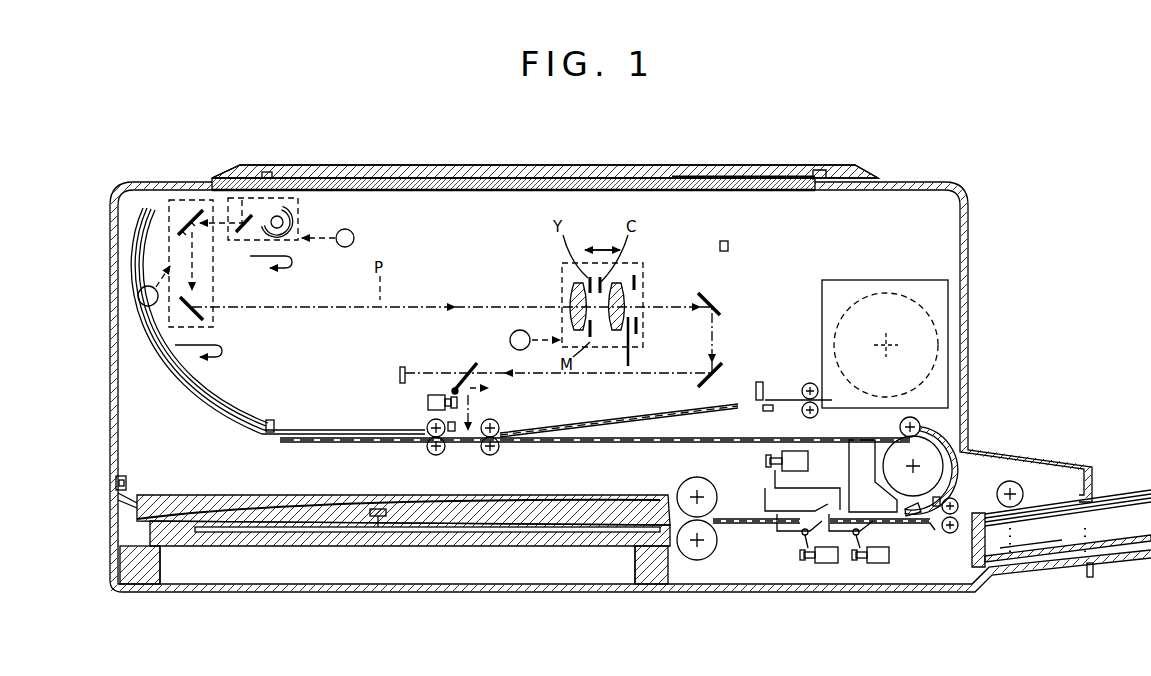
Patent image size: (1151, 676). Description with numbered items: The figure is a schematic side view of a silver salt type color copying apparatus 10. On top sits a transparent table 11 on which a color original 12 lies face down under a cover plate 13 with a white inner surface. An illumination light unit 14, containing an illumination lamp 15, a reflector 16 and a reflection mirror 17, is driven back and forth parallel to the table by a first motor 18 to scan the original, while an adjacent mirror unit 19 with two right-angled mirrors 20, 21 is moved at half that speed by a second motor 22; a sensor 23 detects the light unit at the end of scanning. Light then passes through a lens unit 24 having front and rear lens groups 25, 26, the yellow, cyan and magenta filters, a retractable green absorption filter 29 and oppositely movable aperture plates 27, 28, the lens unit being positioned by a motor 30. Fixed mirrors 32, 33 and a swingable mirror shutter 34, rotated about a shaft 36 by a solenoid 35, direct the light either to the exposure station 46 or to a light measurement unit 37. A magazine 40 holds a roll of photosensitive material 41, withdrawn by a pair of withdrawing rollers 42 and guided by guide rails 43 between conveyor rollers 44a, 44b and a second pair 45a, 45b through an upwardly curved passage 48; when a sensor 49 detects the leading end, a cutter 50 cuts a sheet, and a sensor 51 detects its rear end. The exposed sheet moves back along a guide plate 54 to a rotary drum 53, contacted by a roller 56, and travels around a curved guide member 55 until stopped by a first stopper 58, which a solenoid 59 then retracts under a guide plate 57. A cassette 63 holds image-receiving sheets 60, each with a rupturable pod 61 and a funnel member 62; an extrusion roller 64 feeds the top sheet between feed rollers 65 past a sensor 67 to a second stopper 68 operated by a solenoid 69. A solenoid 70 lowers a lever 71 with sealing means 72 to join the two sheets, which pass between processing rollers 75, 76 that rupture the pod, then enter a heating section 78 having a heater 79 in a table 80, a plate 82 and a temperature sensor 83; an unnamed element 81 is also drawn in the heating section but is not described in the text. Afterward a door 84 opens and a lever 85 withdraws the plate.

The copying apparatus 10 is at (968, 230).
The transparent table 11 is at (768, 192).
The color original 12 is at (550, 172).
The cover plate 13 is at (726, 172).
The illumination light unit 14 is at (233, 200).
The illumination lamp 15 is at (288, 222).
The reflector 16 is at (288, 207).
The reflection mirror 17 is at (246, 236).
The first motor 18 is at (354, 240).
The mirror unit 19 is at (170, 212).
The mirror 20 is at (190, 218).
The mirror 21 is at (205, 318).
The second motor 22 is at (150, 307).
The sensor 23 is at (729, 246).
The lens unit 24 is at (562, 295).
The front lens group 25 is at (575, 283).
The rear lens group 26 is at (620, 283).
The aperture plate 27 is at (637, 283).
The aperture plate 28 is at (640, 326).
The green absorption filter 29 is at (631, 340).
The motor 30 is at (510, 340).
The fixed mirror 32 is at (722, 301).
The fixed mirror 33 is at (714, 368).
The swingable mirror shutter 34 is at (470, 368).
The solenoid 35 is at (428, 401).
The shaft 36 is at (454, 388).
The light measurement unit 37 is at (400, 368).
The magazine 40 is at (940, 309).
The photosensitive material 41 is at (796, 400).
The withdrawing rollers 42 is at (810, 383).
The guide rails 43 is at (597, 420).
The conveyor roller 44a is at (490, 418).
The conveyor roller 44b is at (492, 456).
The conveyor roller 45a is at (428, 423).
The conveyor roller 45b is at (433, 456).
The exposure station 46 is at (468, 446).
The curved passage 48 is at (208, 405).
The sensor 49 is at (270, 420).
The cutter 50 is at (759, 382).
The sensor 51 is at (452, 432).
The rotary drum 53 is at (935, 452).
The guide plate 54 is at (575, 444).
The curved guide member 55 is at (955, 470).
The roller 56 is at (921, 427).
The guide plate 57 is at (912, 525).
The first stopper 58 is at (850, 535).
The solenoid 59 is at (878, 565).
The image-receiving sheets 60 is at (1110, 496).
The rupturable pod 61 is at (1008, 568).
The funnel member 62 is at (1050, 565).
The cassette 63 is at (1110, 565).
The extrusion roller 64 is at (1024, 494).
The feed rollers 65 is at (951, 534).
The sensor 67 is at (940, 500).
The second stopper 68 is at (780, 535).
The solenoid 69 is at (826, 565).
The solenoid 70 is at (805, 462).
The lever 71 is at (775, 476).
The sealing means 72 is at (846, 502).
The processing roller 75 is at (688, 488).
The processing roller 76 is at (697, 561).
The heating section 78 is at (303, 494).
The heater 79 is at (330, 534).
The table 80 is at (470, 547).
The paper sheet 81 is at (250, 505).
The plate 82 is at (192, 496).
The sensor 83 is at (378, 518).
The door 84 is at (120, 474).
The lever 85 is at (132, 494).